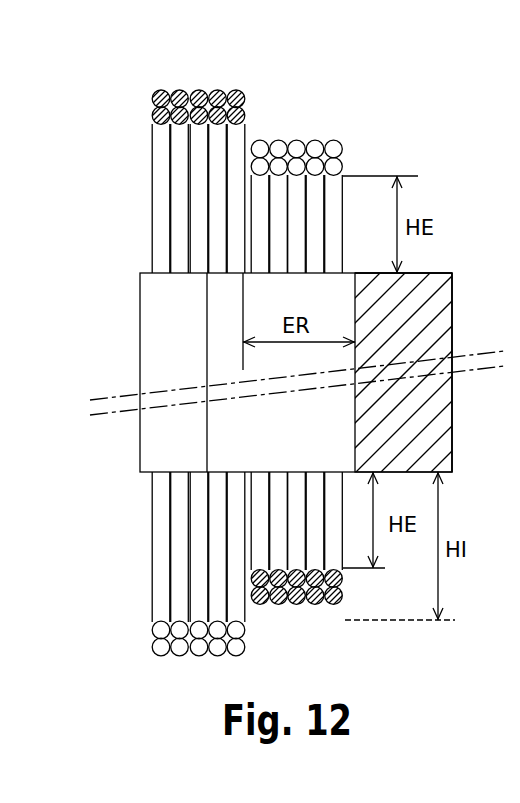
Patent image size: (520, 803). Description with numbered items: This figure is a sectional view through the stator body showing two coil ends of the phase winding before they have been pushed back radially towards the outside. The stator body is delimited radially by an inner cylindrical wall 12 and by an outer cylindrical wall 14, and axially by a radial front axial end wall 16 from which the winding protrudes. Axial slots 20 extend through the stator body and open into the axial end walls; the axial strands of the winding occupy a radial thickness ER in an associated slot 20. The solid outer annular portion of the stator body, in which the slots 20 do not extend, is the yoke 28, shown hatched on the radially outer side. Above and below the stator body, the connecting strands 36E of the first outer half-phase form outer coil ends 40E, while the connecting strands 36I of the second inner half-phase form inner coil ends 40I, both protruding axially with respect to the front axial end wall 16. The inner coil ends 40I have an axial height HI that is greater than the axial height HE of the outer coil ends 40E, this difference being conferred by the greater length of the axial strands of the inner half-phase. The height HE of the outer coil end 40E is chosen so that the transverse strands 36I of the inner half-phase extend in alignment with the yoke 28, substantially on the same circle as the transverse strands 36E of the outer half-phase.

The inner cylindrical wall 12 is at (140, 370).
The outer cylindrical wall 14 is at (452, 445).
The radial front axial end wall 16 is at (425, 273).
The axial slot 20 is at (190, 305).
The yoke 28 is at (445, 335).
The connecting strands of the second inner half-phase 36I is at (244, 93).
The inner coil ends 40I is at (210, 88).
The connecting strands of the first outer half-phase 36E is at (330, 140).
The outer coil ends 40E is at (294, 140).